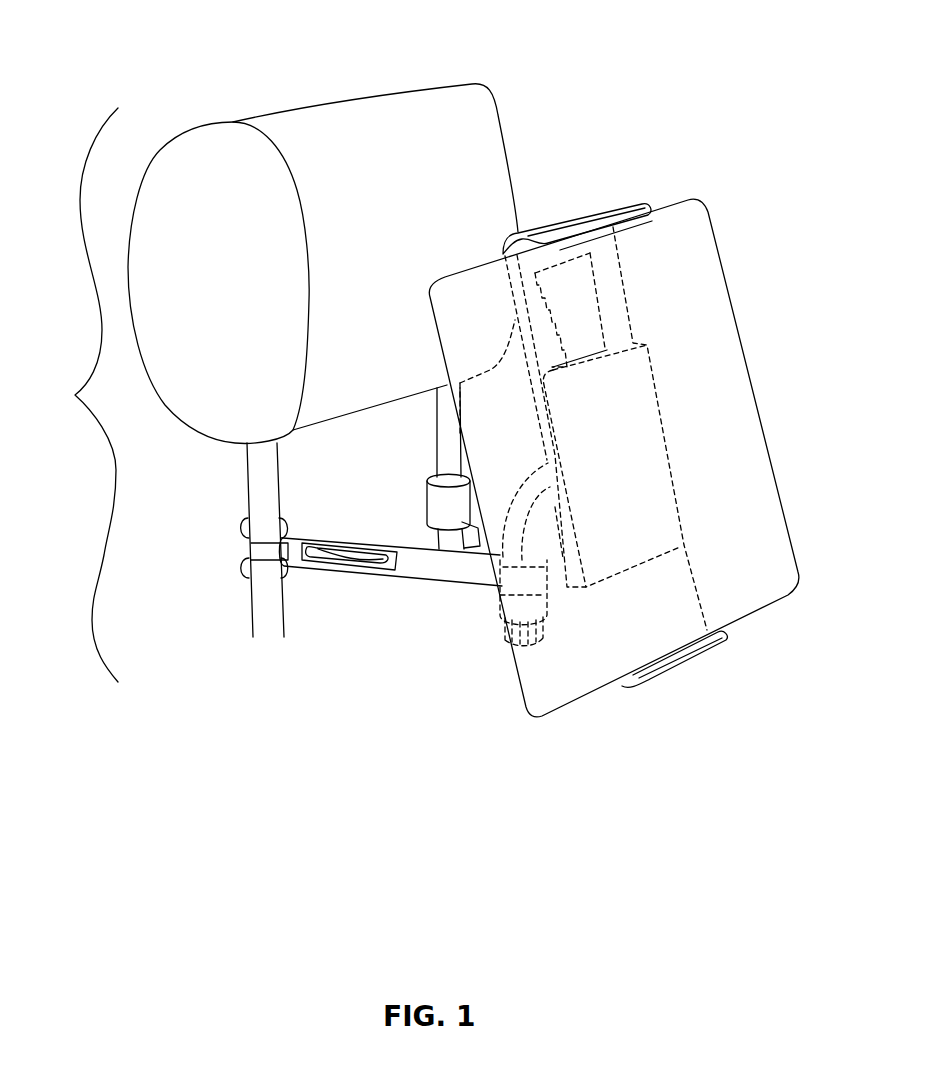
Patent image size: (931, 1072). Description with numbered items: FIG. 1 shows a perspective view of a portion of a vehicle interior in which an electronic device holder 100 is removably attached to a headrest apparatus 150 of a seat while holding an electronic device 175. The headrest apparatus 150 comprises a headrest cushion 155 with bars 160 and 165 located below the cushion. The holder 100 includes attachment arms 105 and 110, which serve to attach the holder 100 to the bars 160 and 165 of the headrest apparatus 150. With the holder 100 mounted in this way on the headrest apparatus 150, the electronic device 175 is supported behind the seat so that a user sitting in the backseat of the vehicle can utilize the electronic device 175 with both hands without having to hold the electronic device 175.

The electronic device holder 100 is at (602, 210).
The attachment arm 105 is at (432, 580).
The attachment arm 110 is at (480, 503).
The headrest apparatus 150 is at (77, 395).
The headrest cushion 155 is at (447, 72).
The bar 160 is at (240, 478).
The bar 165 is at (432, 455).
The electronic device 175 is at (758, 392).